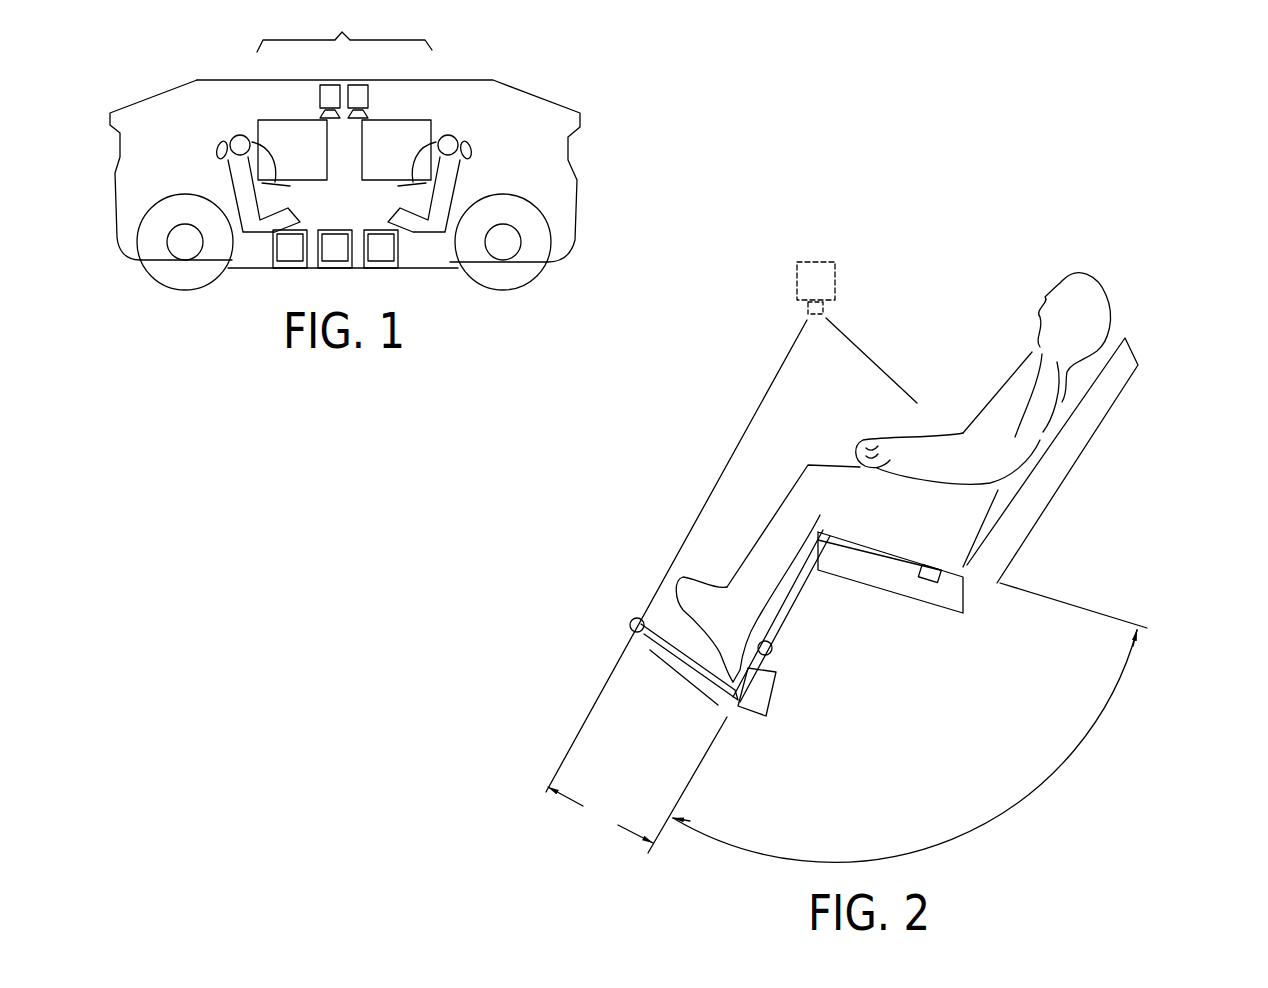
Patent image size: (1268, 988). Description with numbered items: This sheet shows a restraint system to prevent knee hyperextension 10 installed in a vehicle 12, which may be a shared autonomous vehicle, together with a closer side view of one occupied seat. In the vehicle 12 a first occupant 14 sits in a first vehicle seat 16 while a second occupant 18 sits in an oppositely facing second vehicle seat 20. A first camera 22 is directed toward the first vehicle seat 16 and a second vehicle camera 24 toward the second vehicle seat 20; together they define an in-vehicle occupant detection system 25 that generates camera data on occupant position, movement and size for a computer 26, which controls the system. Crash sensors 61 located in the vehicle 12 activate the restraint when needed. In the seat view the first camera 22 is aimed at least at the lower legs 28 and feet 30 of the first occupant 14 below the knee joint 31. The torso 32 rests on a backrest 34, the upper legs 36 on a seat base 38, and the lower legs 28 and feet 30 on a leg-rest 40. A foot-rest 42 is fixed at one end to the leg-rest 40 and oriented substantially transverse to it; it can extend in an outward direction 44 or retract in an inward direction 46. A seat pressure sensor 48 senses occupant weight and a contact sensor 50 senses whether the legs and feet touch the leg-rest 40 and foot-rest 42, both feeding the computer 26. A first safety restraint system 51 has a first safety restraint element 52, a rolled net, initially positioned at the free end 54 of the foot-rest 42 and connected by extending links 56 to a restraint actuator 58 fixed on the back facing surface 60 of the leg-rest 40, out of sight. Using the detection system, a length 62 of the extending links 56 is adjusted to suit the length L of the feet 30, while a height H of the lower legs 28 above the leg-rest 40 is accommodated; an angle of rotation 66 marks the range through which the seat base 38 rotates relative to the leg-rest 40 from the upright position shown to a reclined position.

In FIG. 1, the restraint system to prevent knee hyperextension 10 is at (580, 92).
In FIG. 2, the restraint system to prevent knee hyperextension 10 is at (1128, 257).
In FIG. 1, the vehicle 12 is at (235, 80).
In FIG. 1, the first occupant 14 is at (462, 140).
In FIG. 2, the first occupant 14 is at (945, 405).
In FIG. 1, the first vehicle seat 16 is at (422, 226).
In FIG. 2, the first vehicle seat 16 is at (1128, 462).
In FIG. 1, the second occupant 18 is at (235, 140).
In FIG. 1, the second vehicle seat 20 is at (270, 233).
In FIG. 1, the first camera 22 is at (357, 95).
In FIG. 2, the first camera 22 is at (795, 282).
In FIG. 1, the second vehicle camera 24 is at (331, 95).
In FIG. 1, the in-vehicle occupant detection system 25 is at (344, 30).
In FIG. 1, the computer 26 is at (335, 249).
In FIG. 2, the lower legs 28 is at (783, 505).
In FIG. 2, the feet 30 is at (728, 587).
In FIG. 2, the knee joint 31 is at (807, 463).
In FIG. 2, the torso 32 is at (997, 383).
In FIG. 2, the backrest 34 is at (1035, 494).
In FIG. 2, the upper legs 36 is at (873, 503).
In FIG. 2, the seat base 38 is at (897, 573).
In FIG. 2, the leg-rest 40 is at (793, 602).
In FIG. 2, the foot-rest 42 is at (640, 648).
In FIG. 2, the outward direction 44 is at (648, 655).
In FIG. 2, the inward direction 46 is at (717, 708).
In FIG. 2, the seat pressure sensor 48 is at (930, 578).
In FIG. 2, the contact sensor 50 is at (773, 644).
In FIG. 2, the first safety restraint system 51 is at (610, 580).
In FIG. 2, the first safety restraint element 52 is at (628, 620).
In FIG. 2, the free end 54 is at (630, 637).
In FIG. 2, the extending links 56 is at (673, 580).
In FIG. 2, the restraint actuator 58 is at (747, 712).
In FIG. 1, the back facing surface 60 is at (381, 249).
In FIG. 2, the back facing surface 60 is at (776, 660).
In FIG. 1, the crash sensor 61 is at (290, 249).
In FIG. 2, the length 62 is at (637, 785).
In FIG. 2, the angle of rotation 66 is at (910, 722).
In FIG. 2, the height H is at (797, 557).
In FIG. 2, the length of the feet L is at (634, 618).